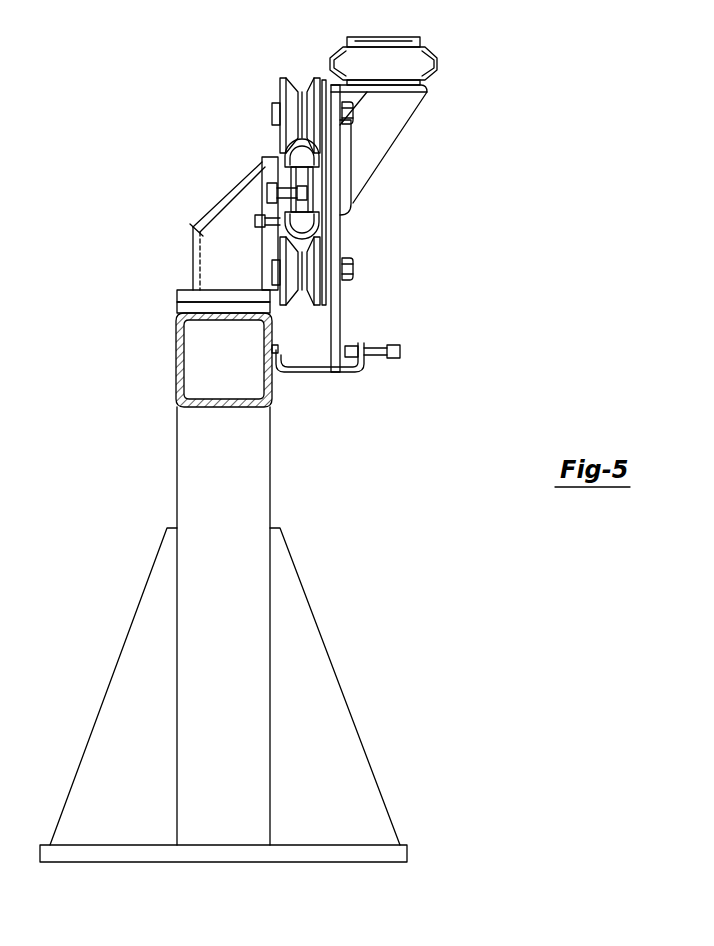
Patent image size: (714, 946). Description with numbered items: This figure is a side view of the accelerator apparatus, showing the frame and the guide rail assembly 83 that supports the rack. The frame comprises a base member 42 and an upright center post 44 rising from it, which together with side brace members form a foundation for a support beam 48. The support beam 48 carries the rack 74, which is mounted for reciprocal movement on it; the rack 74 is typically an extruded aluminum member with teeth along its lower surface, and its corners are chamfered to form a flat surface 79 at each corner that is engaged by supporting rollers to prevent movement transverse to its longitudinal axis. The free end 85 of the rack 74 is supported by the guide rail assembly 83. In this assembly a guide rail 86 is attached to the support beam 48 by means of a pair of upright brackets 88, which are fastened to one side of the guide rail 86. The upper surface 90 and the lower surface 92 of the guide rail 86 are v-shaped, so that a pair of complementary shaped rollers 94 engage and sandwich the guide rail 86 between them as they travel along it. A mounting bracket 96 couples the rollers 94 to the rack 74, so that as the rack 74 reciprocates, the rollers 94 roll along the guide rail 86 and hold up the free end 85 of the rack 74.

The base member 42 is at (112, 853).
The upright center post 44 is at (190, 473).
The support beam 48 is at (177, 320).
The rack 74 is at (385, 9).
The flat surface 79 is at (489, 100).
The guide rail assembly 83 is at (376, 207).
The free end 85 is at (417, 62).
The guide rail 86 is at (283, 145).
The upright brackets 88 is at (213, 225).
The upper surface 90 is at (353, 160).
The lower surface 92 is at (351, 277).
The rollers 94 is at (282, 92).
The mounting bracket 96 is at (377, 113).